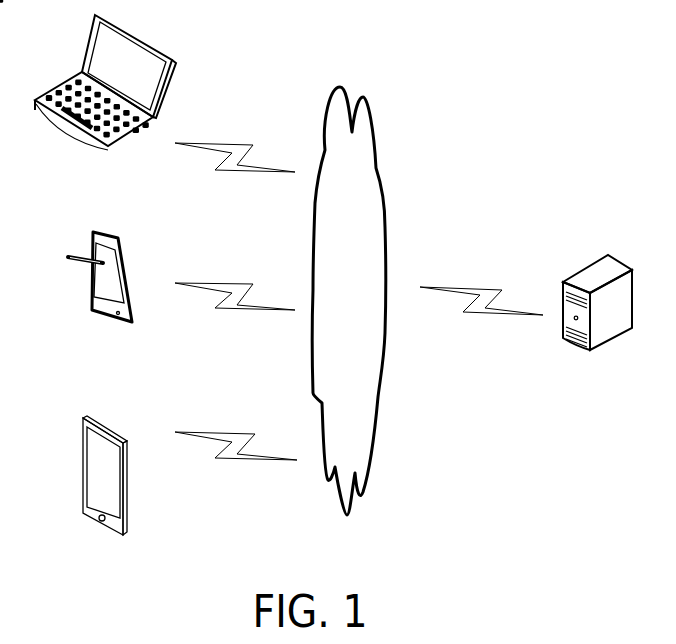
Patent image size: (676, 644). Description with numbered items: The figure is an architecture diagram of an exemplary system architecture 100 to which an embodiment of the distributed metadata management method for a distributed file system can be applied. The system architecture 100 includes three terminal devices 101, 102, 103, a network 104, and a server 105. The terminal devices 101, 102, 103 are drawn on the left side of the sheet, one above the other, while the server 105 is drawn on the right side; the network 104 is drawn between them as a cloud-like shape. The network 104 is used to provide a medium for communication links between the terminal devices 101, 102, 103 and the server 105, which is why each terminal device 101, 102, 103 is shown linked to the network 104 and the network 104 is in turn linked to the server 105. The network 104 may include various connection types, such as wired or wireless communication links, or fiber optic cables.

The system architecture 100 is at (583, 66).
The terminal device 101 is at (105, 497).
The terminal device 102 is at (100, 297).
The terminal device 103 is at (88, 95).
The network 104 is at (349, 301).
The server 105 is at (597, 326).